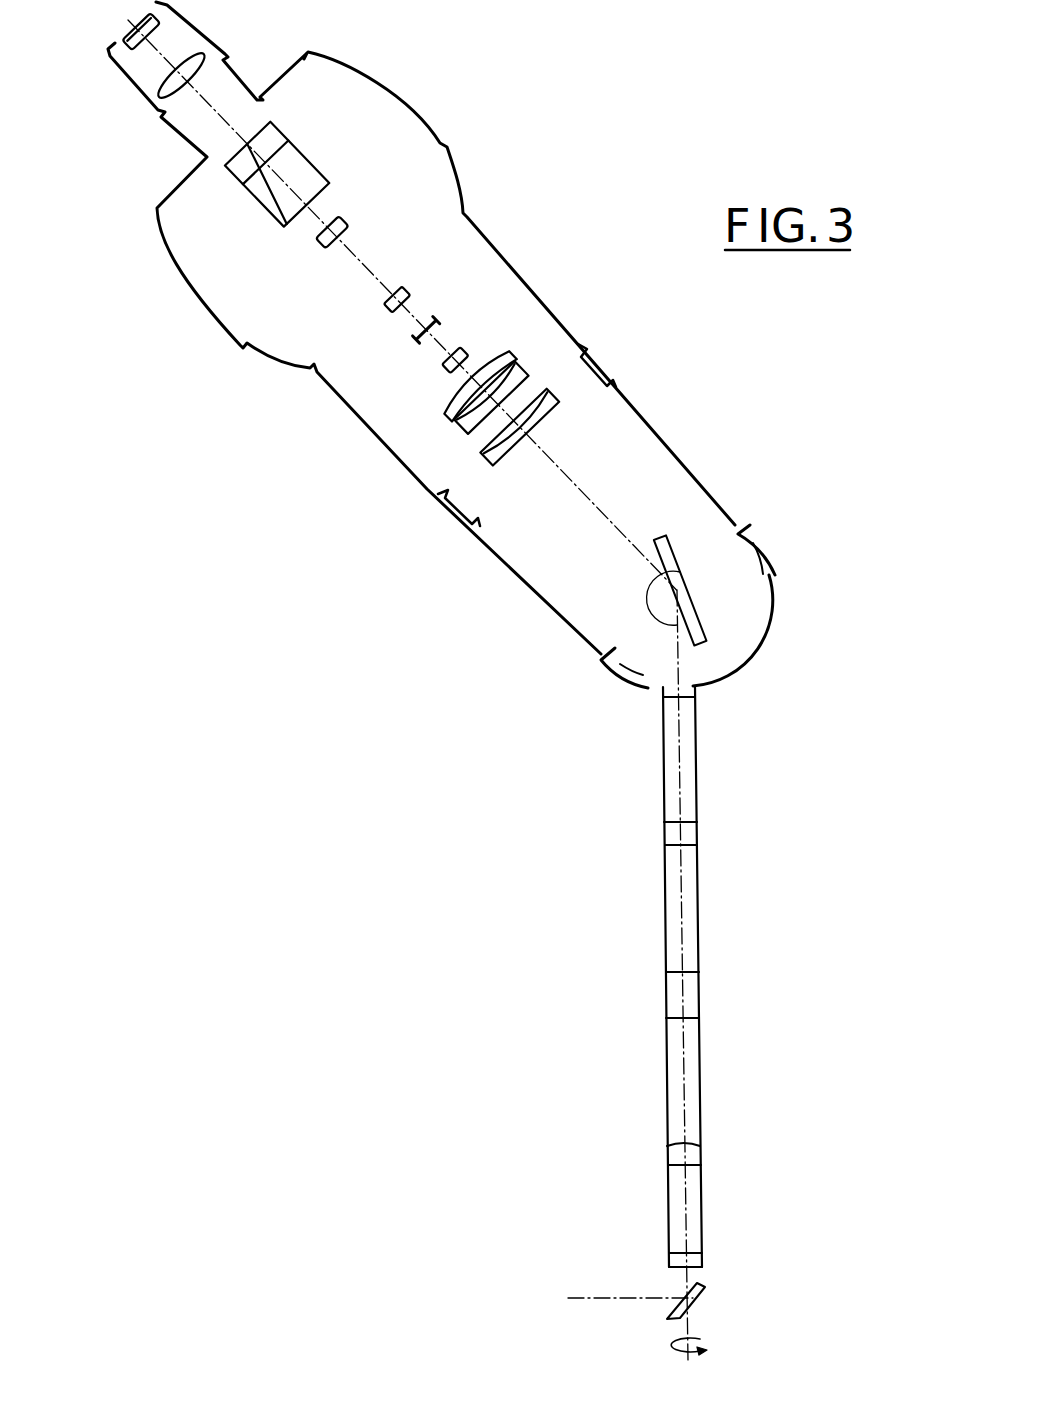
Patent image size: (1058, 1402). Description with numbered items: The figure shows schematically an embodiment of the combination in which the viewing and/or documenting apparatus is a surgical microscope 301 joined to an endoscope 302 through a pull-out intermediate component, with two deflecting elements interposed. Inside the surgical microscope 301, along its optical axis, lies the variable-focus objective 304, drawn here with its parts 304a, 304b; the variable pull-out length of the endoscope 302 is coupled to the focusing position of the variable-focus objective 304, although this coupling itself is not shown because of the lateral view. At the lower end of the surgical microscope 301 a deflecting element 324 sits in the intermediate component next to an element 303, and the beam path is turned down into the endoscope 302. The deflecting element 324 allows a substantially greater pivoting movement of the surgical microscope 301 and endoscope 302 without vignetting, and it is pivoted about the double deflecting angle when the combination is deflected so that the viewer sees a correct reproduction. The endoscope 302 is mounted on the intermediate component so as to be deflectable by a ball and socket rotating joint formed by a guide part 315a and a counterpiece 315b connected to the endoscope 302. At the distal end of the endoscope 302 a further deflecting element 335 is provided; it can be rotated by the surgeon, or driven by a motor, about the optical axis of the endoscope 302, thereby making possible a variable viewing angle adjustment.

The surgical microscope 301 is at (497, 177).
The endoscope 302 is at (641, 944).
The pivotable mirror 303 is at (680, 587).
The variable-focus objective 304 is at (403, 451).
The lens 304a is at (489, 455).
The lens 304b is at (458, 428).
The guide part 315a is at (604, 667).
The counterpiece 315b is at (648, 689).
The deflecting element 324 is at (680, 572).
The deflecting element 335 is at (703, 1290).